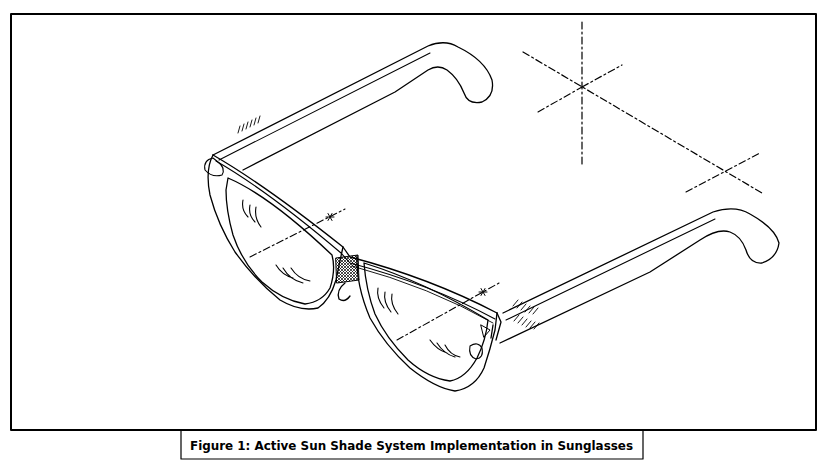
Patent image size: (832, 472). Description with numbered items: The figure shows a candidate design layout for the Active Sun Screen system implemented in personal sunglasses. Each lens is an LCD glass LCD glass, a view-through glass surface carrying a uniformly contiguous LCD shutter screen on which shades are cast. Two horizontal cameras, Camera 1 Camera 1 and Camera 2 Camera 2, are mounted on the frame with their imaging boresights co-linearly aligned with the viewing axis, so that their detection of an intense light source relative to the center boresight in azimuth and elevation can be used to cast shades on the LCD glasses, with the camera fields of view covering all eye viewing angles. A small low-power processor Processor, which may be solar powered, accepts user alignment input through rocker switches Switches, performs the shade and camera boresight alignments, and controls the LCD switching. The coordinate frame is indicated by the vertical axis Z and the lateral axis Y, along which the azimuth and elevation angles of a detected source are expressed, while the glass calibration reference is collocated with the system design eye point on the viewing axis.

The camera Camera 1 is at (478, 355).
The camera Camera 2 is at (206, 160).
The element LCD glass is at (301, 217).
The processor Processor is at (422, 264).
The rocker switches Switches is at (538, 308).
The Z-axis Z is at (569, 92).
The Y-axis Y is at (642, 122).